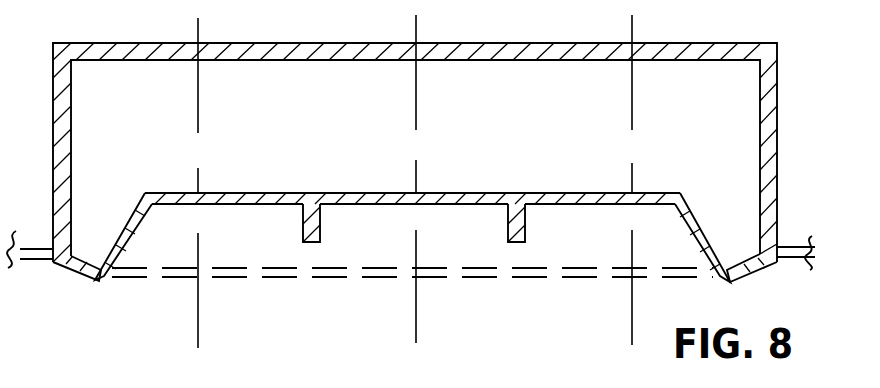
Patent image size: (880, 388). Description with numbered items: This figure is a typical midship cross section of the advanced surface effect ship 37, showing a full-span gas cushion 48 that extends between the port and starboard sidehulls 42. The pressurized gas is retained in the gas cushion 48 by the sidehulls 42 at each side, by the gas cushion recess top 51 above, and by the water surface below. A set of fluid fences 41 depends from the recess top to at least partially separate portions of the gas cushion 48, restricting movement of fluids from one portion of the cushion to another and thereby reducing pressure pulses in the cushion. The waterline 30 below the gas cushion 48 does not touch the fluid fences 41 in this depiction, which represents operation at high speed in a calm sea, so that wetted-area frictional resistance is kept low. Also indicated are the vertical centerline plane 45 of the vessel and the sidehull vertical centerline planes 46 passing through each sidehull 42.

The waterline 30 is at (446, 279).
The advanced surface effect ship 37 is at (778, 100).
The fluid fences 41 is at (320, 223).
The sidehulls 42 is at (82, 281).
The vertical centerline plane 45 is at (412, 202).
The sidehull vertical centerline planes 46 is at (200, 117).
The gas cushion 48 is at (475, 246).
The gas cushion recess top 51 is at (563, 207).